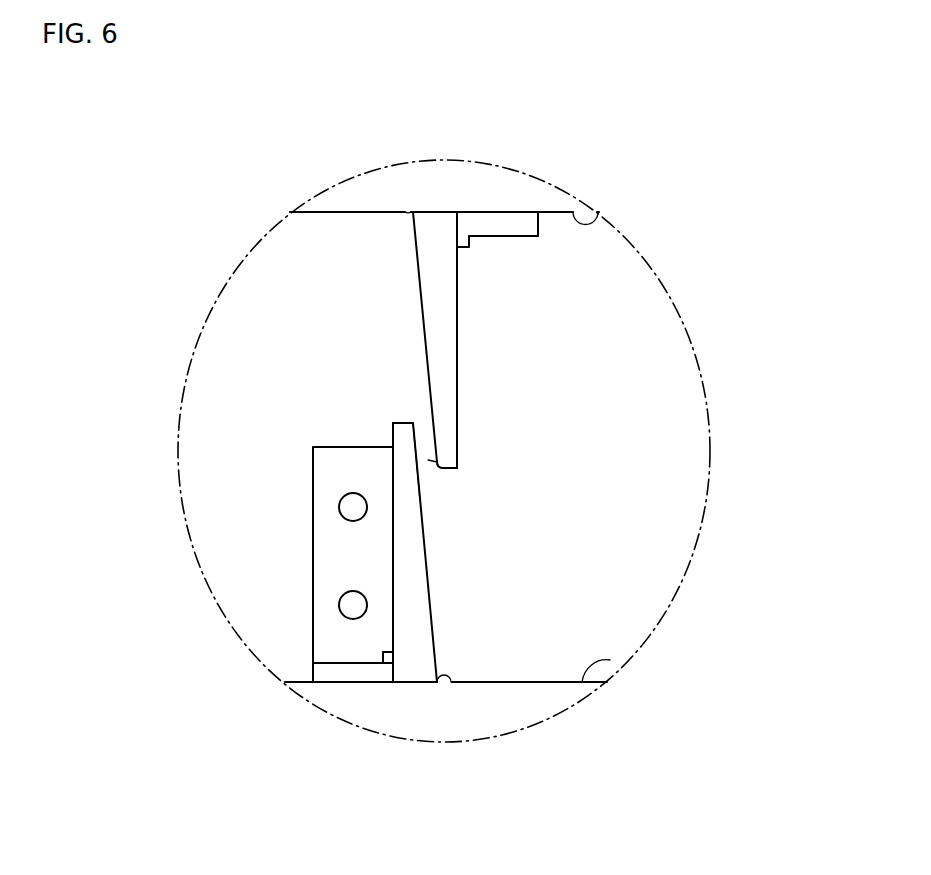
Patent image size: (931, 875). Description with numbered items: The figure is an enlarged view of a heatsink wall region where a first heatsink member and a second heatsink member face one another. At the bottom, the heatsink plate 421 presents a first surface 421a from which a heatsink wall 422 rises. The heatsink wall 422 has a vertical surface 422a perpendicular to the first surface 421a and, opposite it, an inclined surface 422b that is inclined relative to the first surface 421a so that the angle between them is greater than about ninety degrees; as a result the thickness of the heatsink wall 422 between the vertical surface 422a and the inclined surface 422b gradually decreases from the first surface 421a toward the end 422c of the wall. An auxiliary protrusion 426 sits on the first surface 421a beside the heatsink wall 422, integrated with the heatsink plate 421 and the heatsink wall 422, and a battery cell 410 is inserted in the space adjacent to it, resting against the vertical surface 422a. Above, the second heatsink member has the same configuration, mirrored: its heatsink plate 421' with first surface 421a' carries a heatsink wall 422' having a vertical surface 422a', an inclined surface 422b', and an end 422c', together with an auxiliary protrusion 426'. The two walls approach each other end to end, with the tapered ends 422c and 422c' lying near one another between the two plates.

The battery cell 410 is at (328, 542).
The heatsink plate 421 is at (446, 740).
The first surface of the heatsink plate 421a is at (663, 688).
The heatsink plate of the second heatsink member 421' is at (444, 160).
The first surface of the second heatsink plate 421a' is at (627, 194).
The heatsink wall 422 is at (406, 618).
The vertical surface 422a is at (240, 419).
The inclined surface 422b is at (290, 342).
The end of the heatsink wall 422c is at (251, 356).
The heatsink wall of the second heatsink member 422' is at (587, 340).
The vertical surface of the second heatsink wall 422a' is at (637, 401).
The inclined surface of the second heatsink wall 422b' is at (611, 527).
The end of the second heatsink wall 422c' is at (628, 464).
The auxiliary protrusion 426 is at (320, 721).
The auxiliary protrusion of the second heatsink member 426' is at (515, 177).